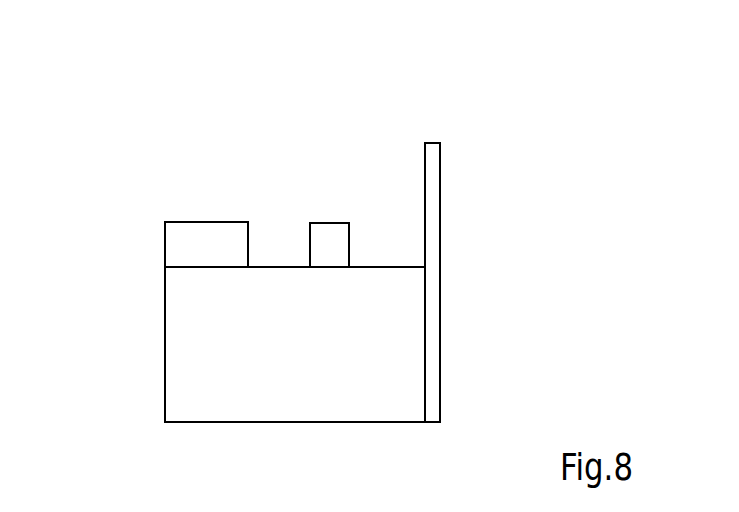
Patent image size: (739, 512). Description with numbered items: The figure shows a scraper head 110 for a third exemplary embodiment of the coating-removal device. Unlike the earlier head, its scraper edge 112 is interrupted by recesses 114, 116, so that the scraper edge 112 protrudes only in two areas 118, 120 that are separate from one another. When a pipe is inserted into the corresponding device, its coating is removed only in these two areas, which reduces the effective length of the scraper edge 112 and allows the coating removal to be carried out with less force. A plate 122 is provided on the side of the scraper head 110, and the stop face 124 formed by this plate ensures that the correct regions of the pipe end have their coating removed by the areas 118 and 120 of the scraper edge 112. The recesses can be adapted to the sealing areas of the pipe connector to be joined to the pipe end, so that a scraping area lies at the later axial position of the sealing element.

The scraper head 110 is at (140, 105).
The scraper edge 112 is at (220, 207).
The recess 114 is at (268, 240).
The recess 116 is at (388, 242).
The protruding area of scraper edge 118 is at (180, 220).
The protruding area of scraper edge 120 is at (330, 220).
The plate 122 is at (432, 308).
The stop face 124 is at (425, 166).